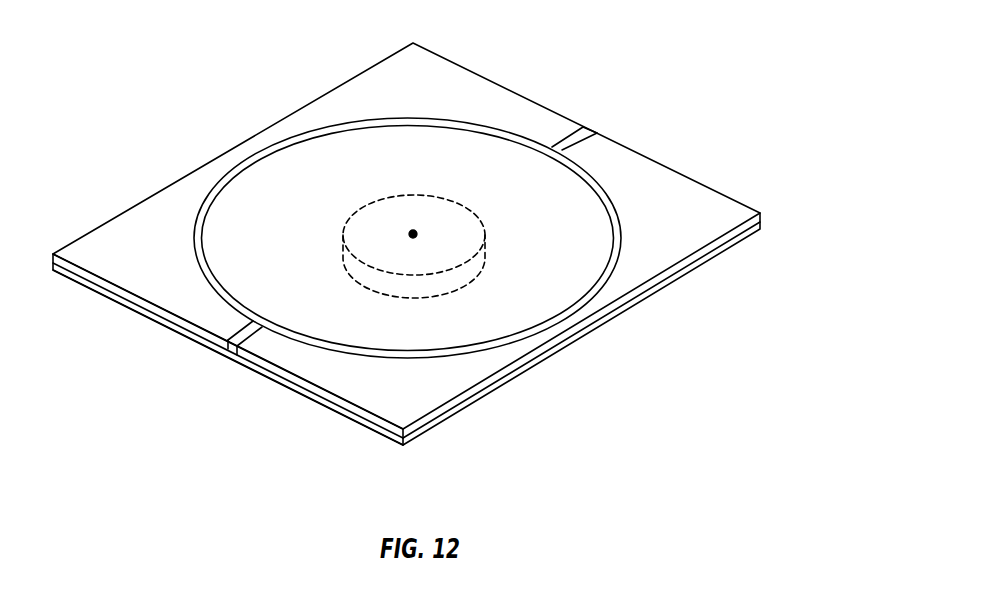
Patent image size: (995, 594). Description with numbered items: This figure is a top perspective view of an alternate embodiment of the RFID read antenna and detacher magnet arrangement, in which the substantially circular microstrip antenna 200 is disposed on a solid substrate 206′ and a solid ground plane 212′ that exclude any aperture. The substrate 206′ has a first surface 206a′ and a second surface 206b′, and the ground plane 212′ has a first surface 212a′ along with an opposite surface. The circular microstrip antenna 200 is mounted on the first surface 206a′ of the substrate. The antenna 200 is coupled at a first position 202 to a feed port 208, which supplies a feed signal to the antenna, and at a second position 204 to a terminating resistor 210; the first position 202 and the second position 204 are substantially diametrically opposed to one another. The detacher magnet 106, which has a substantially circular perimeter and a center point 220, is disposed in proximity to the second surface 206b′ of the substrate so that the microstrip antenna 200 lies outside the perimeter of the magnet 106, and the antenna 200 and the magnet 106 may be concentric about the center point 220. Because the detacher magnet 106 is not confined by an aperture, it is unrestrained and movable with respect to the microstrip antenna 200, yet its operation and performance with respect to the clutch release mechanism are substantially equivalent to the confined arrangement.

The RFID read antenna 200 is at (203, 213).
The first position 202 is at (565, 148).
The second position 204 is at (245, 319).
The solid substrate 206′ is at (683, 195).
The first surface of the substrate 206a′ is at (466, 368).
The second surface of the substrate 206b′ is at (456, 411).
The feed port 208 is at (584, 128).
The terminating resistor 210 is at (229, 344).
The solid ground plane 212′ is at (300, 390).
The first surface of the ground plane 212a′ is at (424, 432).
The detacher magnet 106 is at (485, 243).
The center point 220 is at (413, 234).